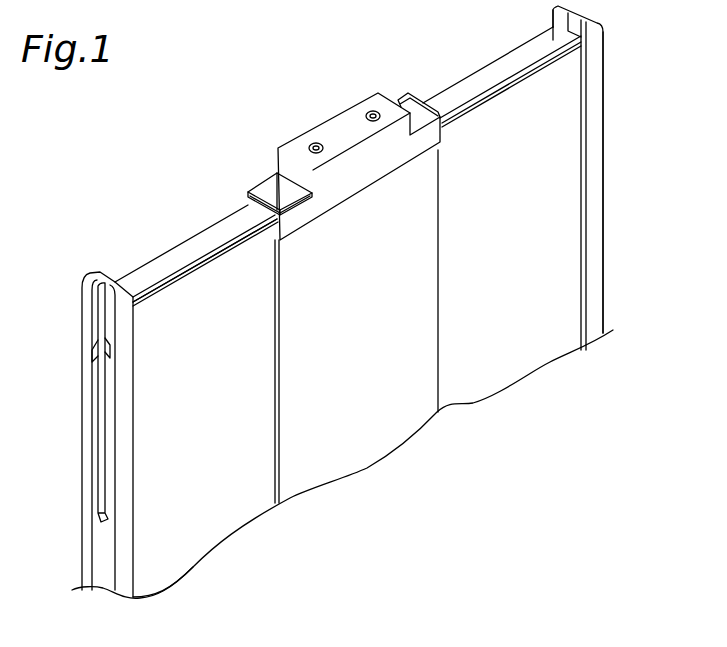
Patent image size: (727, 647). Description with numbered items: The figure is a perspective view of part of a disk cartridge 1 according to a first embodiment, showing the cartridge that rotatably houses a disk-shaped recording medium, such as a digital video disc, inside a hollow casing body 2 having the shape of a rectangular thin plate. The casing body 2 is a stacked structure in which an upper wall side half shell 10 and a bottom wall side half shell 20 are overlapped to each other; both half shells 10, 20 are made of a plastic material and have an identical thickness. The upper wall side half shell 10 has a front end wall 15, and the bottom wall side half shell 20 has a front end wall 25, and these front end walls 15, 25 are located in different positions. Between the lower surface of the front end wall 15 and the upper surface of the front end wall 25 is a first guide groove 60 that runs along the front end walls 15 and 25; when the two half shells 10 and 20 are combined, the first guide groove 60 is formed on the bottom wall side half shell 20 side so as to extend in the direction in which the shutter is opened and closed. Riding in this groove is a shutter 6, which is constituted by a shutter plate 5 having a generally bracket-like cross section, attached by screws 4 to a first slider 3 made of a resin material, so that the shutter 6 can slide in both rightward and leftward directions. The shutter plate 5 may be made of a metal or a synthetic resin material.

The disk cartridge 1 is at (219, 156).
The casing body 2 is at (664, 85).
The first slider 3 is at (268, 183).
The screws 4 is at (315, 143).
The shutter plate 5 is at (431, 226).
The shutter 6 is at (405, 373).
The upper wall side half shell 10 is at (525, 55).
The front end wall 15 is at (478, 85).
The bottom wall side half shell 20 is at (544, 135).
The front end wall 25 is at (200, 268).
The first guide groove 60 is at (166, 296).